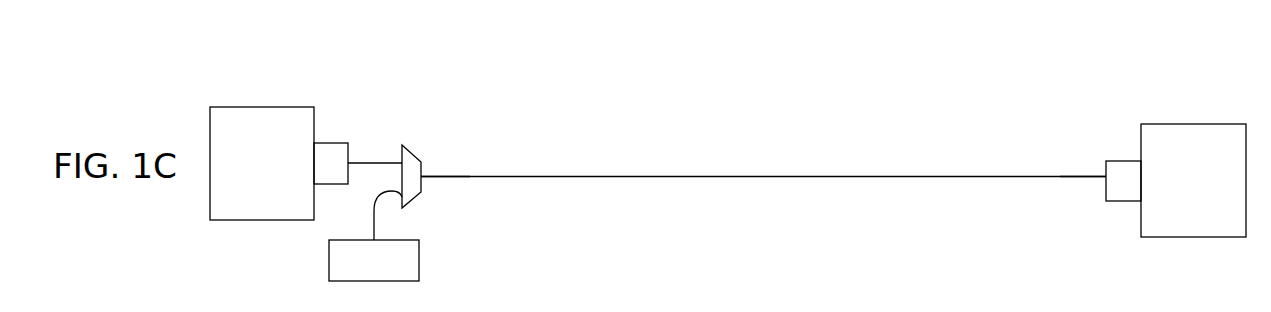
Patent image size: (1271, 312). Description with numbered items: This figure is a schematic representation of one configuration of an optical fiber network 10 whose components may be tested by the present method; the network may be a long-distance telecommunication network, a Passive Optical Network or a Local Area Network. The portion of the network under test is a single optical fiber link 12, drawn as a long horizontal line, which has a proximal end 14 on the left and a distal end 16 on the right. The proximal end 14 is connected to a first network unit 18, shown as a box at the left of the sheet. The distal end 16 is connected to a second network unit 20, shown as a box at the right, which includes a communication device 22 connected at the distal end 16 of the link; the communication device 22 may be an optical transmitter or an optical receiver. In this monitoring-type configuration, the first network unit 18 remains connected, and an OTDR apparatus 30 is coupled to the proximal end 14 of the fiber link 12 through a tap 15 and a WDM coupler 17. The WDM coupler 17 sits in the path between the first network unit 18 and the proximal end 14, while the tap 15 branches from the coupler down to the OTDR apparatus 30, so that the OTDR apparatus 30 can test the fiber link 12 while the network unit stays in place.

The optical fiber network 10 is at (1017, 73).
The optical fiber link 12 is at (727, 176).
The proximal end 14 is at (455, 176).
The tap 15 is at (377, 210).
The distal end 16 is at (1083, 176).
The WDM coupler 17 is at (409, 146).
The first network unit 18 is at (251, 107).
The second network unit 20 is at (1193, 124).
The communication device 22 is at (1120, 161).
The OTDR apparatus 30 is at (419, 260).